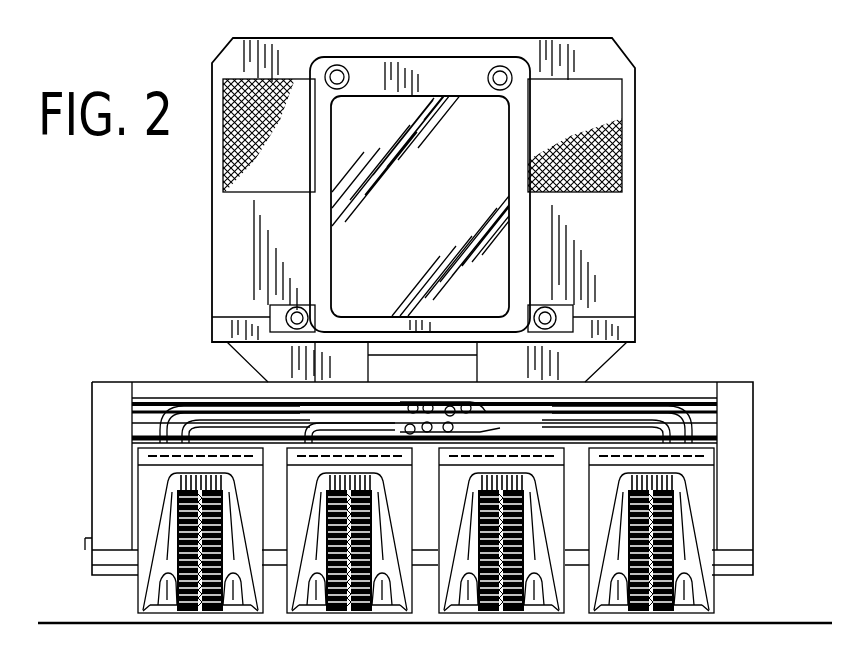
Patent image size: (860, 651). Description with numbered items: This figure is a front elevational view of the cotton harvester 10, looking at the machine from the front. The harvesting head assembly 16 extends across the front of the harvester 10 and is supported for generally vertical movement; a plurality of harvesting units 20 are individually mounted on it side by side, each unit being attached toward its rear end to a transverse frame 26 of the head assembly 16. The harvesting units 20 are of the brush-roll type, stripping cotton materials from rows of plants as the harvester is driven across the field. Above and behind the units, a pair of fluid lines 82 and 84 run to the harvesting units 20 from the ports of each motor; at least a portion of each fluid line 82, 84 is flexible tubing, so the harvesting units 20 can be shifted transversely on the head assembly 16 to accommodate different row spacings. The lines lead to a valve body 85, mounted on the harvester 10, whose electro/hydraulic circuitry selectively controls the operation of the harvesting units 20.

The cotton harvester 10 is at (694, 115).
The harvesting head assembly 16 is at (403, 456).
The harvesting units 20 is at (128, 597).
The transverse frame 26 is at (84, 432).
The fluid line 82 is at (170, 420).
The fluid line 84 is at (193, 420).
The valve body 85 is at (440, 412).